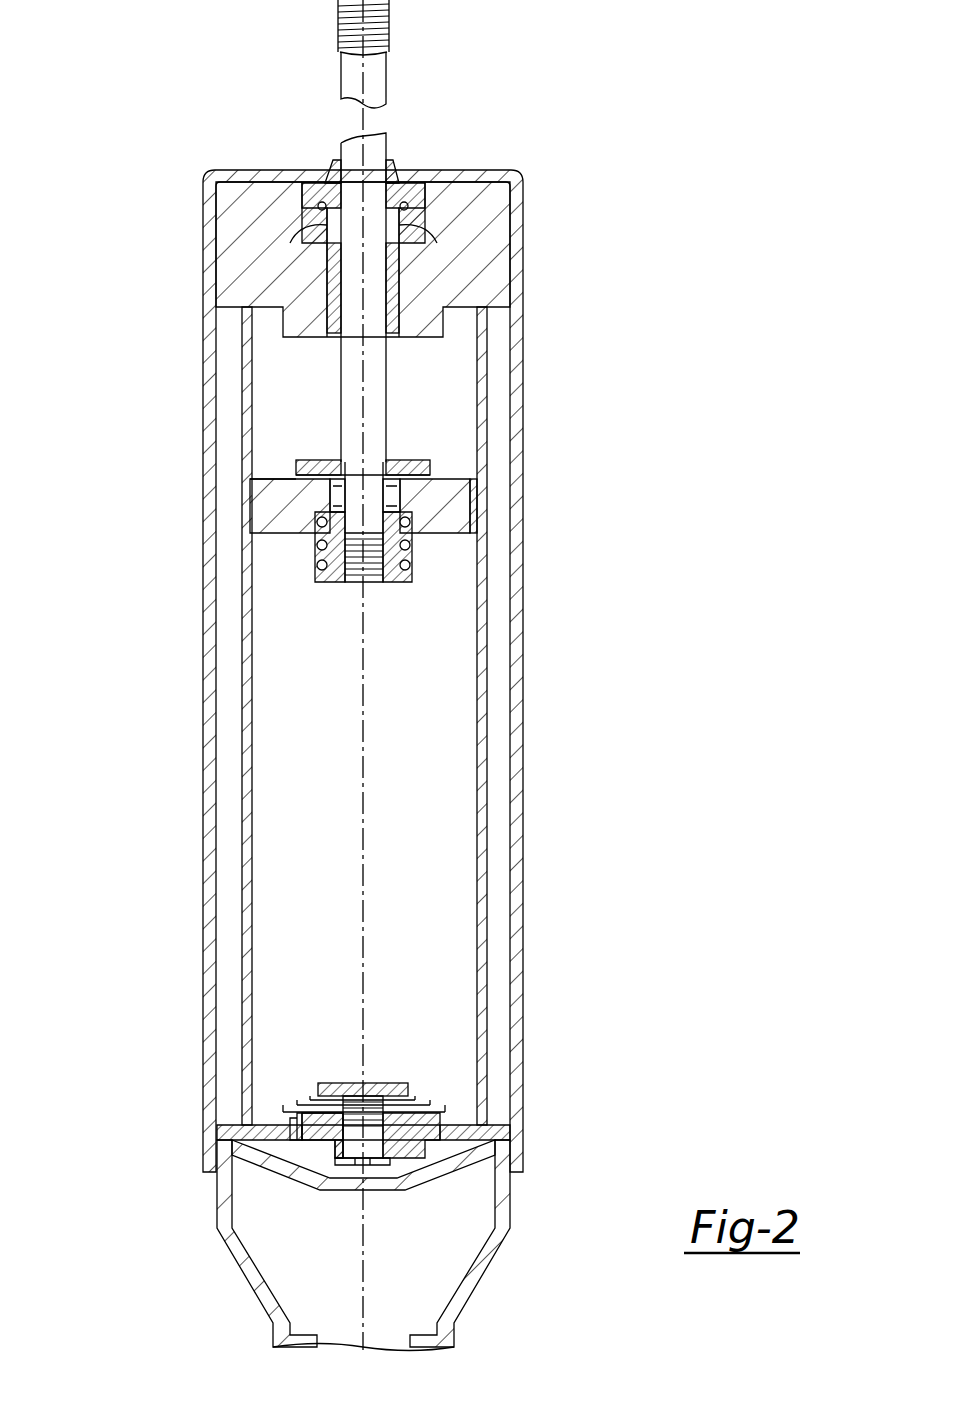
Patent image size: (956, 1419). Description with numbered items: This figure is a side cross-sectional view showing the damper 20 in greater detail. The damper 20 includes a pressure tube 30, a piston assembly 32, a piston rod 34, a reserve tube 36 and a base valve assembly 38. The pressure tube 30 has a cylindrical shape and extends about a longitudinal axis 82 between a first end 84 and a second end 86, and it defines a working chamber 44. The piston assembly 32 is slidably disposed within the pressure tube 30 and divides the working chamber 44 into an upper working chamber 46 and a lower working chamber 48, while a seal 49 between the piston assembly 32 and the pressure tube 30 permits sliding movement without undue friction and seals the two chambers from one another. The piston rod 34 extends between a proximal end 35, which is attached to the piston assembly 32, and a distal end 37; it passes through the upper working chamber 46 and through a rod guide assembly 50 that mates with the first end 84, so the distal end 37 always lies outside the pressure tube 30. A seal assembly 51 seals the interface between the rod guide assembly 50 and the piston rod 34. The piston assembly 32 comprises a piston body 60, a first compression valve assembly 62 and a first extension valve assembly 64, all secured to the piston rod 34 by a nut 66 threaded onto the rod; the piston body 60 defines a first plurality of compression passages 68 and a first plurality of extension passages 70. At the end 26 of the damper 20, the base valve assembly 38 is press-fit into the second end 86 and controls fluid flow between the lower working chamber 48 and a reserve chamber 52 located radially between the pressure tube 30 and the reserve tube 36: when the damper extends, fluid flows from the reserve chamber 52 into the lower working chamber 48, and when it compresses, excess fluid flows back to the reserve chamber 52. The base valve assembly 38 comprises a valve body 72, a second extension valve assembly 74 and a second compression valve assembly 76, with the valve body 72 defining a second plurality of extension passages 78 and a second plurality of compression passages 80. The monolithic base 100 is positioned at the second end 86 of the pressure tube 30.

The damper 20 is at (639, 218).
The end of the damper 26 is at (172, 1178).
The pressure tube 30 is at (247, 927).
The piston assembly 32 is at (381, 551).
The piston rod 34 is at (379, 266).
The proximal end 35 is at (355, 558).
The reserve tube 36 is at (210, 580).
The distal end 37 is at (390, 36).
The base valve assembly 38 is at (295, 1114).
The working chamber 44 is at (303, 808).
The upper working chamber 46 is at (320, 405).
The lower working chamber 48 is at (337, 734).
The seal 49 is at (470, 515).
The rod guide assembly 50 is at (243, 224).
The seal assembly 51 is at (405, 217).
The reserve chamber 52 is at (495, 663).
The piston body 60 is at (293, 515).
The first compression valve assembly 62 is at (432, 461).
The first extension valve assembly 64 is at (303, 578).
The nut 66 is at (405, 575).
The first plurality of compression passages 68 is at (420, 496).
The first plurality of extension passages 70 is at (325, 492).
The valve body 72 is at (395, 1130).
The second extension valve assembly 74 is at (306, 1083).
The second compression valve assembly 76 is at (292, 1143).
The second plurality of extension passages 78 is at (297, 1135).
The second plurality of compression passages 80 is at (307, 1138).
The longitudinal axis 82 is at (363, 120).
The first end 84 is at (555, 327).
The second end 86 is at (529, 1127).
The monolithic base 100 is at (496, 1257).